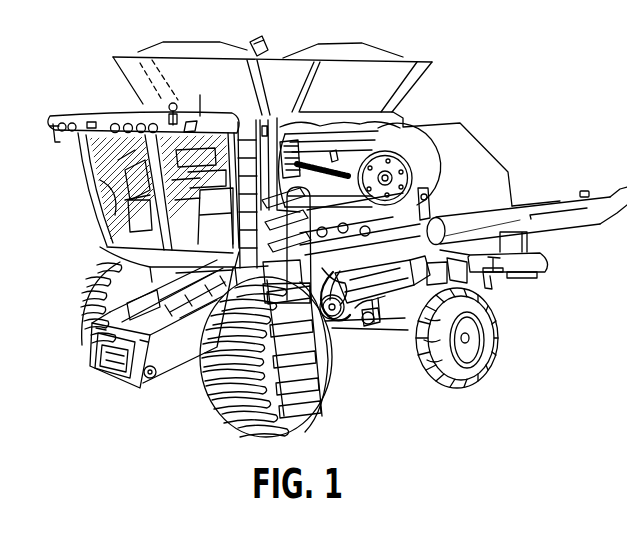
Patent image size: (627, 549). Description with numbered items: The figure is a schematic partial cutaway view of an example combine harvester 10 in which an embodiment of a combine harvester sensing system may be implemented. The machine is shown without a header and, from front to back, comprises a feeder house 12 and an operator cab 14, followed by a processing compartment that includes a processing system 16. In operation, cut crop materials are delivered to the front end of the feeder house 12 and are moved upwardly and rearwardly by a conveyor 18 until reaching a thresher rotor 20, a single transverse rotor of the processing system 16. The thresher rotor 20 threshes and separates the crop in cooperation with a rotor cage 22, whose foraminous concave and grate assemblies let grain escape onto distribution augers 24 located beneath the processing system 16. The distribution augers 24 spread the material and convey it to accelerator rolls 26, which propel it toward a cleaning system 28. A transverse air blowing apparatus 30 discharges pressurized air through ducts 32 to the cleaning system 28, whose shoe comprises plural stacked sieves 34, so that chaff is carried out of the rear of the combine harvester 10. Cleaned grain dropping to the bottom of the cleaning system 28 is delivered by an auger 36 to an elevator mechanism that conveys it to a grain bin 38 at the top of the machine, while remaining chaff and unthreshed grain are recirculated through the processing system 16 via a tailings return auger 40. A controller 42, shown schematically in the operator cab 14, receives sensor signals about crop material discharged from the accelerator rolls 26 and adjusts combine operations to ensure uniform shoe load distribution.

The combine harvester 10 is at (55, 50).
The feeder house 12 is at (92, 343).
The operator cab 14 is at (114, 252).
The processing system 16 is at (403, 134).
The conveyor 18 is at (280, 269).
The thresher rotor 20 is at (390, 178).
The rotor cage 22 is at (365, 147).
The distribution augers 24 is at (429, 205).
The accelerator rolls 26 is at (397, 329).
The cleaning system 28 is at (351, 334).
The air blowing apparatus 30 is at (207, 388).
The ducts 32 is at (329, 289).
The stacked sieves 34 is at (468, 382).
The auger 36 is at (367, 328).
The grain bin 38 is at (116, 72).
The tailings return auger 40 is at (372, 322).
The controller 42 is at (127, 196).